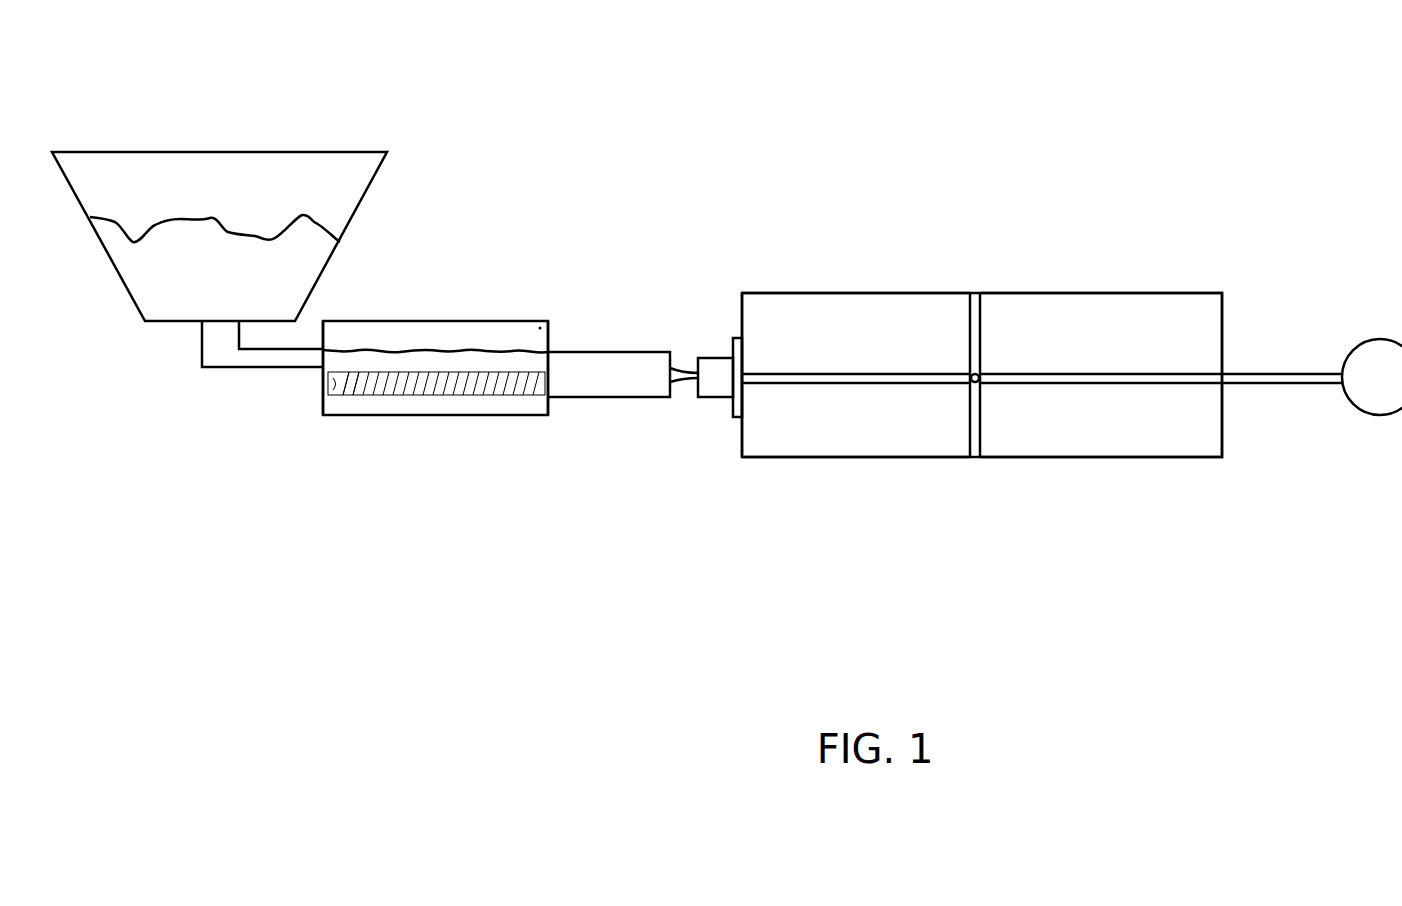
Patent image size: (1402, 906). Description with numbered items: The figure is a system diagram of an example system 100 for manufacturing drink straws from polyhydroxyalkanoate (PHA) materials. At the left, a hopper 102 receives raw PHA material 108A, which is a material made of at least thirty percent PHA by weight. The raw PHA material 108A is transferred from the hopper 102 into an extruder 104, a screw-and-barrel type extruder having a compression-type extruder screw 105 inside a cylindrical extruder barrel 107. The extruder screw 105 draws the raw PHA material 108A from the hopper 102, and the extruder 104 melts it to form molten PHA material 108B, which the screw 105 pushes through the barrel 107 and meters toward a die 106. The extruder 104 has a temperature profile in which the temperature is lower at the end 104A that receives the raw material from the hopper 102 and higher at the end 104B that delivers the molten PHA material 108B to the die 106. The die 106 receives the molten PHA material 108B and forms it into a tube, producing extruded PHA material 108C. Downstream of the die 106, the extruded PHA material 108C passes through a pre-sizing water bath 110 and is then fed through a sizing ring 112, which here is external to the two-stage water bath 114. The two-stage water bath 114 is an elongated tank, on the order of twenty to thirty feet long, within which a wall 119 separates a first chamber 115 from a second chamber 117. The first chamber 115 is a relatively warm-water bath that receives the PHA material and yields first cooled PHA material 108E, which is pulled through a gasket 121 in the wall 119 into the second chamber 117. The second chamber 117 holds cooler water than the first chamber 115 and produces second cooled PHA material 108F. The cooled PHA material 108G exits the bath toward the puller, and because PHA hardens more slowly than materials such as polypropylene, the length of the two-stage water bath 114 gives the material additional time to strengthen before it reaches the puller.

The system 100 is at (515, 527).
The hopper 102 is at (202, 150).
The extruder 104 is at (460, 323).
The end of the extruder 104A is at (322, 410).
The end of the extruder 104B is at (548, 412).
The extruder screw 105 is at (468, 394).
The die 106 is at (618, 353).
The extruder barrel 107 is at (514, 414).
The raw PHA material 108A is at (293, 233).
The molten PHA material 108B is at (520, 350).
The extruded PHA material 108C is at (683, 362).
The first cooled PHA material 108E is at (870, 372).
The second cooled PHA material 108F is at (1112, 372).
The cooled PHA material 108G is at (1288, 372).
The pre-sizing water bath 110 is at (718, 358).
The sizing ring 112 is at (734, 410).
The two-stage water bath 114 is at (974, 286).
The first chamber 115 is at (833, 456).
The second chamber 117 is at (1125, 457).
The wall 119 is at (966, 433).
The gasket 121 is at (966, 385).